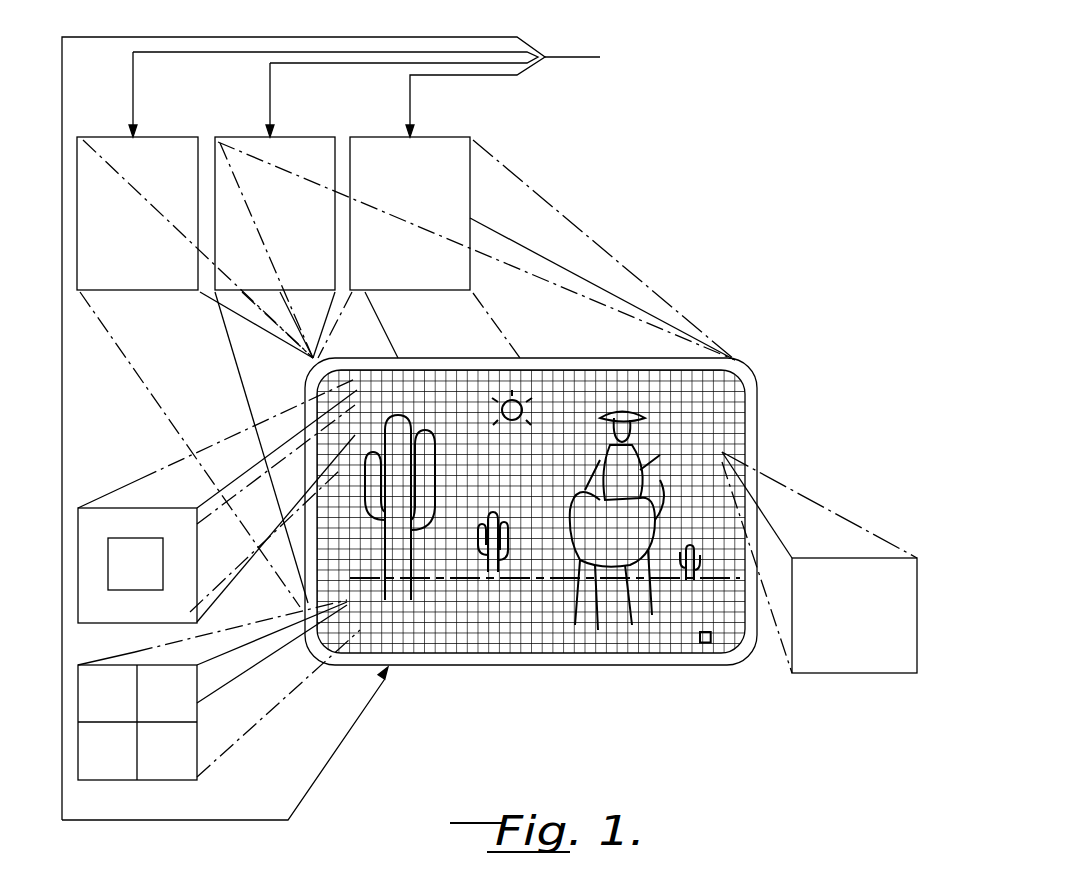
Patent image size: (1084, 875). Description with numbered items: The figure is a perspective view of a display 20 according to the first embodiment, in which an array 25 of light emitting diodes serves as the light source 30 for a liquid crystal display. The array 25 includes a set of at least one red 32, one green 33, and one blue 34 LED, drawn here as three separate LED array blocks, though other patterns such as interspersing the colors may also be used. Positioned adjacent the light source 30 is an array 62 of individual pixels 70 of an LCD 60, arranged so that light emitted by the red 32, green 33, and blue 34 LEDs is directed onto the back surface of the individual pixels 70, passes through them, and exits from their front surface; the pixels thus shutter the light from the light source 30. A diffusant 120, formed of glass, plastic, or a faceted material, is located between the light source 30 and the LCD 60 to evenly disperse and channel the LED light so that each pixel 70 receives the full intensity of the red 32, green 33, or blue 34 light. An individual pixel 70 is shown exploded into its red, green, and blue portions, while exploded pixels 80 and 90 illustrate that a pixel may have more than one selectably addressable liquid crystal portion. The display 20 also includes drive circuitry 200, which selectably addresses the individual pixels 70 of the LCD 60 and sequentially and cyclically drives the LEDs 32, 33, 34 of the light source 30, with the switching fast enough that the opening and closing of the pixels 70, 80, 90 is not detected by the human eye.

The display 20 is at (778, 278).
The drive circuitry 200 is at (710, 40).
The light source 30 is at (455, 100).
The array 25 is at (113, 138).
The red LED 32 is at (135, 292).
The green LED 33 is at (330, 292).
The blue LED 34 is at (405, 292).
The diffusant 120 is at (597, 243).
The array of individual pixels 62 is at (450, 700).
The LCD 60 is at (703, 643).
The individual pixel 70 is at (885, 562).
The pixel 80 is at (103, 508).
The pixel 90 is at (178, 782).